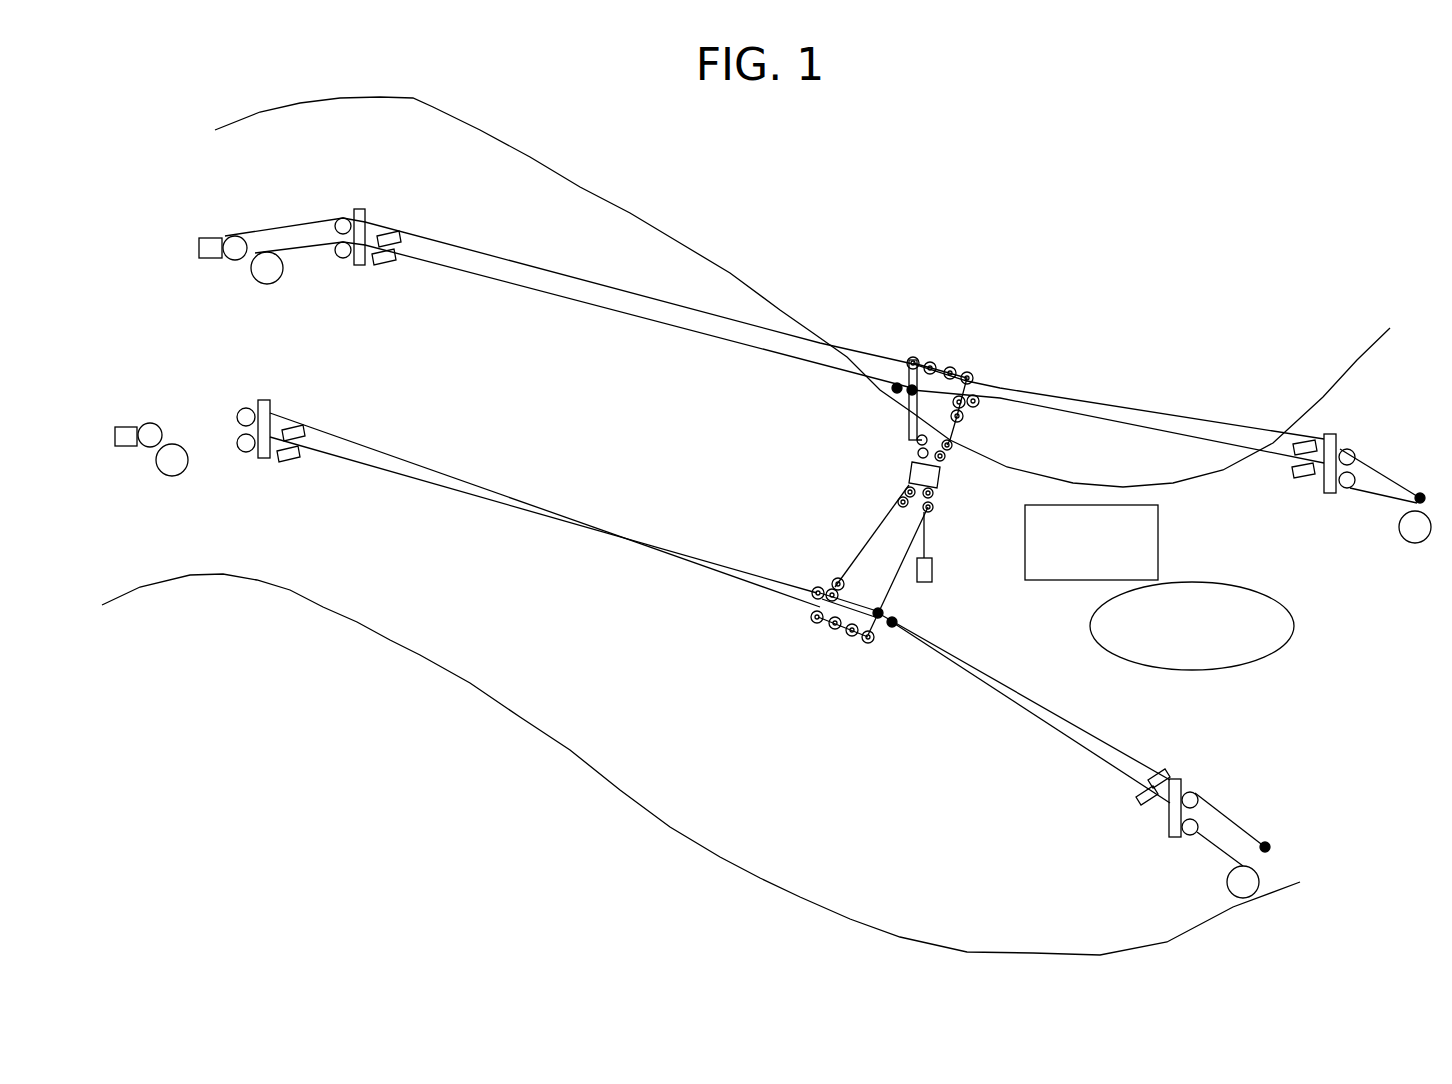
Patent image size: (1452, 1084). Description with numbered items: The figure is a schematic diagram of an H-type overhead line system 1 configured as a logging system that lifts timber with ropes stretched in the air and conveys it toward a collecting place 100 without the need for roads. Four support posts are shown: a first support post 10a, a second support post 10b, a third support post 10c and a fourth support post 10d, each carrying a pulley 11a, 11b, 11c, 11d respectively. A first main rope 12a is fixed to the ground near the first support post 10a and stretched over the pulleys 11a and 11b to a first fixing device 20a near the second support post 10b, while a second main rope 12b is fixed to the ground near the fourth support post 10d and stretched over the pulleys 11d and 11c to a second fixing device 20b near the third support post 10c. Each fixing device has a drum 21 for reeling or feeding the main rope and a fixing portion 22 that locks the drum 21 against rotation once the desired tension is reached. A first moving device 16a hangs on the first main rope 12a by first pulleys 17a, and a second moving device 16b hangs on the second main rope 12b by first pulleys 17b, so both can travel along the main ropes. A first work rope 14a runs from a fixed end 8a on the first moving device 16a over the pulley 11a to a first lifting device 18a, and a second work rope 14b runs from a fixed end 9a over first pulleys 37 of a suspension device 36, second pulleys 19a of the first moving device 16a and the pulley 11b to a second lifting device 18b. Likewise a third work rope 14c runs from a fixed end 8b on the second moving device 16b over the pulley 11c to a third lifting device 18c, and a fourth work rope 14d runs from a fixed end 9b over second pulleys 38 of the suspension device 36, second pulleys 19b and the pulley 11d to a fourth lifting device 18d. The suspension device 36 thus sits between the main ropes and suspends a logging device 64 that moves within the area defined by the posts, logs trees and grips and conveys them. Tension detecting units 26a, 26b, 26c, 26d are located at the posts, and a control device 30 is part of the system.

The overhead line system 1 is at (1056, 262).
The fixed end 8a is at (900, 622).
The fixed end 8b is at (893, 382).
The fixed end 9a is at (880, 607).
The fixed end 9b is at (905, 393).
The first support post 10a is at (1176, 840).
The second support post 10b is at (264, 461).
The third support post 10c is at (359, 268).
The fourth support post 10d is at (1330, 497).
The pulley 11a is at (1196, 795).
The pulley 11b is at (246, 407).
The pulley 11c is at (343, 219).
The pulley 11d is at (1352, 452).
The first main rope 12a is at (427, 466).
The second main rope 12b is at (606, 284).
The first work rope 14a is at (970, 667).
The second work rope 14b is at (403, 482).
The third work rope 14c is at (640, 328).
The fourth work rope 14d is at (908, 428).
The first moving device 16a is at (803, 648).
The second moving device 16b is at (906, 338).
The first pulleys 17a is at (855, 645).
The first pulleys 17b is at (967, 372).
The first lifting device 18a is at (1243, 898).
The second lifting device 18b is at (174, 478).
The third lifting device 18c is at (270, 276).
The fourth lifting device 18d is at (1415, 545).
The second pulleys 19a is at (825, 582).
The second pulleys 19b is at (972, 412).
The first fixing device 20a is at (128, 400).
The second fixing device 20b is at (214, 212).
The drum 21 is at (237, 254).
The fixing portion 22 is at (198, 246).
The first tension detecting unit 26a is at (1140, 818).
The second tension detecting unit 26b is at (304, 466).
The third tension detecting unit 26c is at (403, 272).
The fourth tension detecting unit 26d is at (1303, 492).
The control device 30 is at (1158, 542).
The suspension device 36 is at (890, 471).
The first pulleys 37 is at (938, 505).
The second pulleys 38 is at (952, 458).
The logging device 64 is at (935, 570).
The collecting place 100 is at (1290, 642).